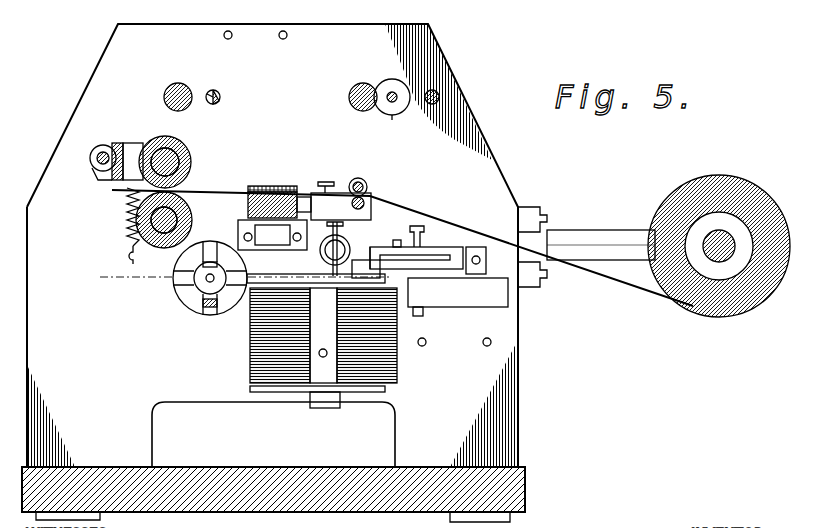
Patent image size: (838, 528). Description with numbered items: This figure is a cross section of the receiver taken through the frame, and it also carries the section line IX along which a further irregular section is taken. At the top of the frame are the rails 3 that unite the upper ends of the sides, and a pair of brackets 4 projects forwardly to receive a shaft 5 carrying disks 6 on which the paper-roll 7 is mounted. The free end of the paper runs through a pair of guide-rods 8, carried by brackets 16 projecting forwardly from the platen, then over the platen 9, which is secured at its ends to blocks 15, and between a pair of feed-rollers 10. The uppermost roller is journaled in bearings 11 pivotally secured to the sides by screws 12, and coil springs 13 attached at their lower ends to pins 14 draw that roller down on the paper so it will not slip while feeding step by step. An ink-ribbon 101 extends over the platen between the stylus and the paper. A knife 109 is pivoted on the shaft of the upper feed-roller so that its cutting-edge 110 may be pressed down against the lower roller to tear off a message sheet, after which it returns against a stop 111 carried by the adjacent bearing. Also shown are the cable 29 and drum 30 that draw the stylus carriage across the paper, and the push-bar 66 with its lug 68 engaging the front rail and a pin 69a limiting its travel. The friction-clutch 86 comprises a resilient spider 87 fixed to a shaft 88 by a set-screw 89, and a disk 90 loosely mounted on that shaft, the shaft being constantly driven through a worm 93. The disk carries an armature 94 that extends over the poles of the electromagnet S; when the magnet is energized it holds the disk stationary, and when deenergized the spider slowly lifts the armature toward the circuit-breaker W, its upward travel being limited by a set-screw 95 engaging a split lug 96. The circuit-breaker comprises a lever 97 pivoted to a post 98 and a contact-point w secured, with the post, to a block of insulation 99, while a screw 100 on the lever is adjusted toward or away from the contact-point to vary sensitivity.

The rails 3 is at (175, 83).
The brackets 4 is at (606, 232).
The shaft 5 is at (719, 241).
The disks 6 is at (705, 272).
The paper-roll 7 is at (735, 312).
The guide-rods 8 is at (372, 198).
The platen 9 is at (248, 205).
The feed-rollers 10 is at (192, 165).
The bearings 11 is at (100, 150).
The screws 12 is at (95, 172).
The coil springs 13 is at (135, 228).
The pins 14 is at (130, 257).
The blocks 15 is at (238, 228).
The brackets 16 is at (418, 224).
The cable 29 is at (213, 89).
The drum 30 is at (221, 100).
The push-bar 66 is at (388, 102).
The lug 68 is at (400, 85).
The pin 69a is at (392, 118).
The friction-clutch 86 is at (199, 283).
The resilient spider 87 is at (205, 308).
The shaft 88 is at (205, 277).
The set-screw 89 is at (214, 308).
The disk 90 is at (175, 295).
The worm 93 is at (335, 249).
The armature 94 is at (296, 276).
The set-screw 95 is at (324, 190).
The split lug 96 is at (353, 182).
The levers 97 is at (452, 247).
The posts 98 is at (478, 250).
The block of insulation 99 is at (512, 298).
The screws 100 is at (470, 246).
The ink-ribbon 101 is at (266, 186).
The knife 109 is at (118, 142).
The cutting-edge 110 is at (125, 196).
The stop 111 is at (135, 142).
The electromagnet S is at (248, 370).
The circuit-breaker W is at (416, 249).
The contact-point w is at (425, 314).
The section line IX— IX is at (246, 256).